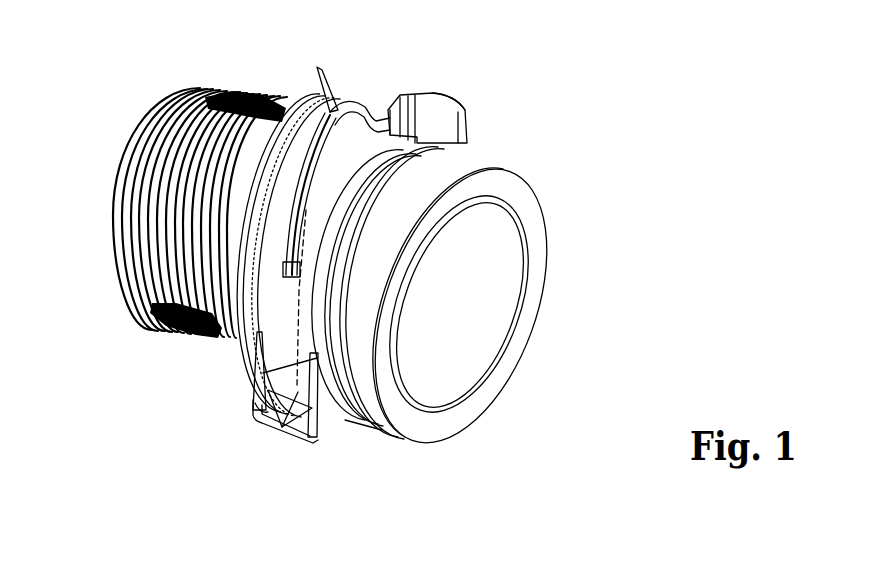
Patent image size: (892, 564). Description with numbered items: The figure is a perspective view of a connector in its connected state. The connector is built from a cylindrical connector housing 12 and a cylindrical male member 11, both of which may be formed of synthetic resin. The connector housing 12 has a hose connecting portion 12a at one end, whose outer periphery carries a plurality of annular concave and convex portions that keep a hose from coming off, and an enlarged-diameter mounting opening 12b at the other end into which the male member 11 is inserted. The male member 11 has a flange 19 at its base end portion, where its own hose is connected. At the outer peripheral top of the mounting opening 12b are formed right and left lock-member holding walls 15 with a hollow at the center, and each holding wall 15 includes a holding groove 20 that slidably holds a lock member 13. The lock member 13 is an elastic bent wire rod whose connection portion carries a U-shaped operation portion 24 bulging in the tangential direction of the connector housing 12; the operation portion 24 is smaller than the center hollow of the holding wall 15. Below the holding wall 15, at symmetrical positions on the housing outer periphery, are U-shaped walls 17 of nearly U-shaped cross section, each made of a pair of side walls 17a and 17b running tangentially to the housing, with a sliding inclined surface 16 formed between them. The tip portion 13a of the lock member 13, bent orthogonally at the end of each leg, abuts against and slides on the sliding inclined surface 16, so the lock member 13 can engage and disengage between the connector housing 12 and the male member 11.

The male member 11 is at (550, 230).
The connector housing 12 is at (157, 335).
The hose connecting portion 12a is at (248, 92).
The mounting opening 12b is at (473, 156).
The lock member 13 is at (388, 108).
The tip portion 13a is at (255, 405).
The lock-member holding wall 15 is at (477, 58).
The sliding inclined surface 16 is at (277, 410).
The U-shaped wall 17 is at (292, 446).
The side wall 17a is at (327, 394).
The side wall 17b is at (255, 372).
The flange 19 is at (496, 378).
The holding groove 20 is at (286, 257).
The operation portion 24 is at (362, 103).